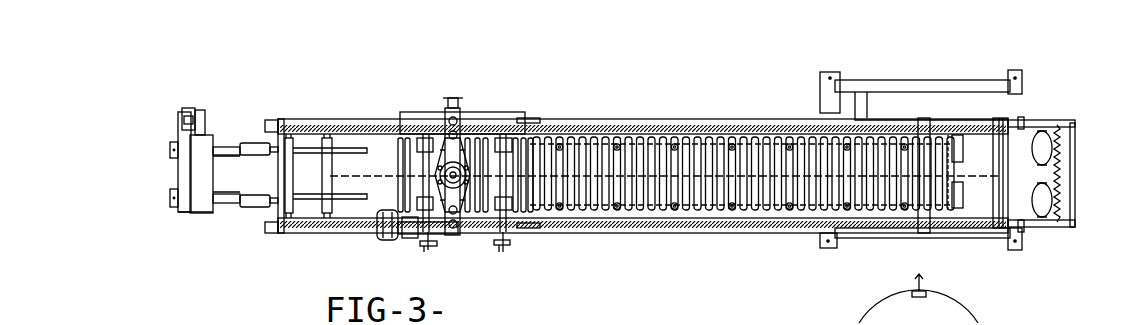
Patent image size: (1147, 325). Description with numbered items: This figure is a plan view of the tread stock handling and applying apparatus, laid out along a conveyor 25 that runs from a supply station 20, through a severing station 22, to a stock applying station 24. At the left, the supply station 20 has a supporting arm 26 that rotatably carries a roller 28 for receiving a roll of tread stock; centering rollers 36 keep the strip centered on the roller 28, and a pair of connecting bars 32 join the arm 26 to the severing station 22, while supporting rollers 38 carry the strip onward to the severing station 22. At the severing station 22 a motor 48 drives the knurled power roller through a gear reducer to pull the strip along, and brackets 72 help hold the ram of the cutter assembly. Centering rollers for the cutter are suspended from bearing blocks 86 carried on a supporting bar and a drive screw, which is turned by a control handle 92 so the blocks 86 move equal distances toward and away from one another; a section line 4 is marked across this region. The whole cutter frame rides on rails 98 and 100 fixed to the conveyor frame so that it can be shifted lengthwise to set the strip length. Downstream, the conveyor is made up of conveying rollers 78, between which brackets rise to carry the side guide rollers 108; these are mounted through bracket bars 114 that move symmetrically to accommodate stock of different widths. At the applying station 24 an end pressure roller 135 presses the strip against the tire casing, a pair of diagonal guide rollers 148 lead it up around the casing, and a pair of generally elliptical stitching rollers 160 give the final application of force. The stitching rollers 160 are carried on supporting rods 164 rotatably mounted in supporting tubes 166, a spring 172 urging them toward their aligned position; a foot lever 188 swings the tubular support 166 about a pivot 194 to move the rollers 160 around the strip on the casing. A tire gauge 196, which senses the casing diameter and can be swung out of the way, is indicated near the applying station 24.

The supply station 20 is at (150, 238).
The severing station 22 is at (469, 171).
The stock applying station 24 is at (921, 175).
The conveyor 25 is at (742, 180).
The supporting arm 26 is at (186, 112).
The roller 28 is at (188, 181).
The connecting bars 32 is at (222, 148).
The centering rollers 36 is at (258, 195).
The supporting rollers 38 is at (324, 184).
The section line 4 is at (365, 152).
The motor 48 is at (380, 240).
The brackets 72 is at (475, 236).
The conveying rollers 78 is at (654, 214).
The bearing blocks 86 is at (425, 138).
The control handle 92 is at (424, 247).
The rail 98 is at (316, 234).
The rail 100 is at (312, 104).
The side guide rollers 108 is at (675, 212).
The bracket bars 114 is at (748, 212).
The end pressure roller 135 is at (952, 153).
The diagonal guide rollers 148 is at (962, 194).
The stitching rollers 160 is at (1038, 196).
The supporting rods 164 is at (1024, 230).
The supporting tubes 166 is at (1020, 120).
The spring 172 is at (1062, 196).
The foot lever 188 is at (1077, 209).
The pivot 194 is at (924, 236).
The tire gauge 196 is at (908, 293).